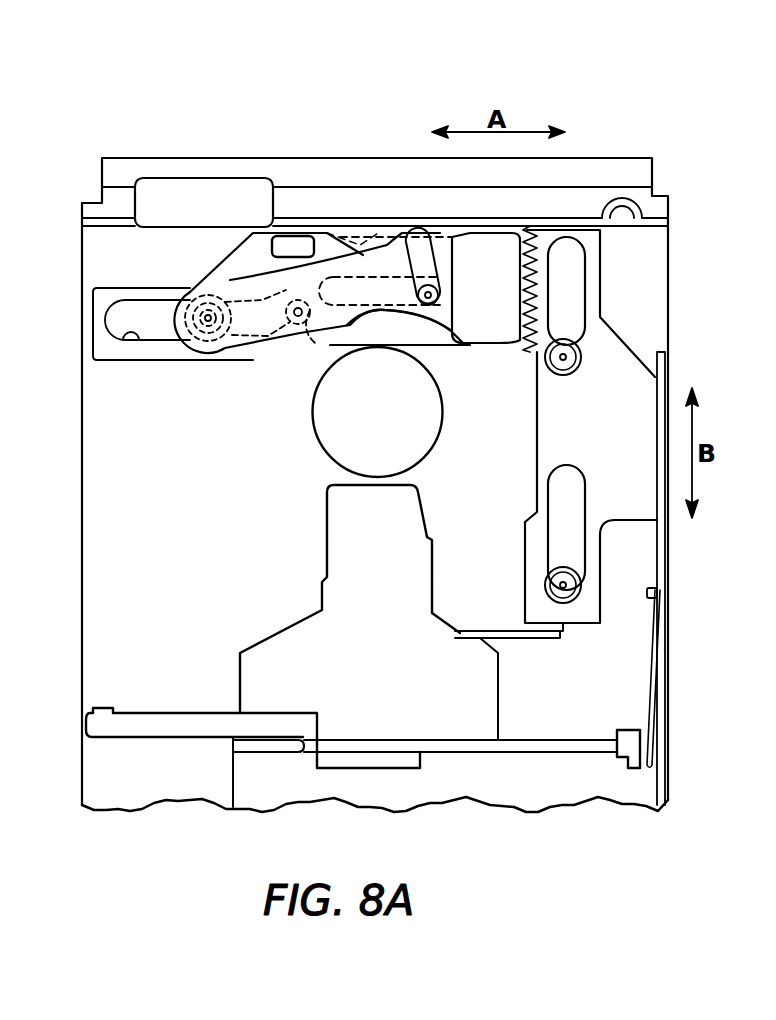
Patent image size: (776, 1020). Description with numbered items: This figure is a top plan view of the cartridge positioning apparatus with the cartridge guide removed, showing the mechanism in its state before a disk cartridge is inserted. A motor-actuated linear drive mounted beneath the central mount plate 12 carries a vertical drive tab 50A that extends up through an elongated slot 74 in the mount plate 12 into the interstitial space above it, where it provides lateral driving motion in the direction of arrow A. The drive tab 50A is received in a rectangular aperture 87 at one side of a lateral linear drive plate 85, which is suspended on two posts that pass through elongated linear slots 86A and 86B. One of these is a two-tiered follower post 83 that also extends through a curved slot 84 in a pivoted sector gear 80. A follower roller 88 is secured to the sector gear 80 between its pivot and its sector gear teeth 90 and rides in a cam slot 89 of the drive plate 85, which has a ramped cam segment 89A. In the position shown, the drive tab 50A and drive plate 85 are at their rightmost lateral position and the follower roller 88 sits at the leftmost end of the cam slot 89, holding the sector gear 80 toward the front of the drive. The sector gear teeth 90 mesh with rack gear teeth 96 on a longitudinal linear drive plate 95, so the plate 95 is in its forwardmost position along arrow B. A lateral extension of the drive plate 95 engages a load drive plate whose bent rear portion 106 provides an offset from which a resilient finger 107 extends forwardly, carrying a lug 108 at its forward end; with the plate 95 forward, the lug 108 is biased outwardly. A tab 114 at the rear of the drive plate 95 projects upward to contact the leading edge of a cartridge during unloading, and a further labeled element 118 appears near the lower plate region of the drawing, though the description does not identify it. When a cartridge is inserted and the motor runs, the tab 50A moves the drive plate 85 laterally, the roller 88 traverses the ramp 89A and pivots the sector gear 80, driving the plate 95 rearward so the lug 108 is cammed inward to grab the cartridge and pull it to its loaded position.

The central mount plate 12 is at (668, 236).
The vertical drive tab 50A is at (308, 237).
The elongated slot 74 is at (365, 232).
The sector gear 80 is at (328, 318).
The follower post 83 is at (440, 300).
The curved slot 84 is at (442, 262).
The lateral linear drive plate 85 is at (150, 362).
The elongated linear slot 86A is at (131, 349).
The elongated linear slot 86B is at (383, 318).
The rectangular aperture 87 is at (335, 235).
The follower roller 88 is at (300, 345).
The cam slot 89 is at (232, 345).
The ramped cam segment 89A is at (290, 325).
The sector gear teeth 90 is at (528, 226).
The longitudinal linear drive plate 95 is at (537, 450).
The rack gear teeth 96 is at (584, 218).
The rear portion of load plate 106 is at (650, 740).
The resilient finger 107 is at (645, 710).
The lug 108 is at (648, 597).
The tab 114 is at (499, 662).
The plate 118 is at (466, 637).